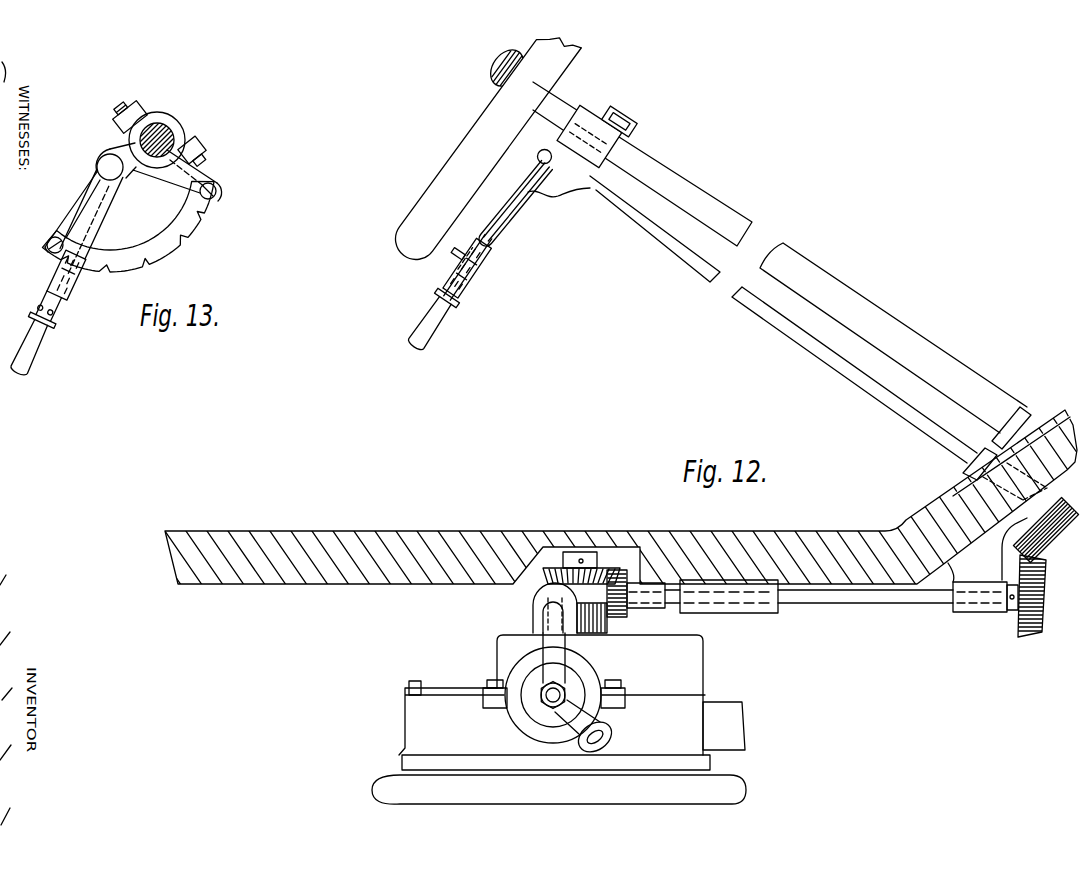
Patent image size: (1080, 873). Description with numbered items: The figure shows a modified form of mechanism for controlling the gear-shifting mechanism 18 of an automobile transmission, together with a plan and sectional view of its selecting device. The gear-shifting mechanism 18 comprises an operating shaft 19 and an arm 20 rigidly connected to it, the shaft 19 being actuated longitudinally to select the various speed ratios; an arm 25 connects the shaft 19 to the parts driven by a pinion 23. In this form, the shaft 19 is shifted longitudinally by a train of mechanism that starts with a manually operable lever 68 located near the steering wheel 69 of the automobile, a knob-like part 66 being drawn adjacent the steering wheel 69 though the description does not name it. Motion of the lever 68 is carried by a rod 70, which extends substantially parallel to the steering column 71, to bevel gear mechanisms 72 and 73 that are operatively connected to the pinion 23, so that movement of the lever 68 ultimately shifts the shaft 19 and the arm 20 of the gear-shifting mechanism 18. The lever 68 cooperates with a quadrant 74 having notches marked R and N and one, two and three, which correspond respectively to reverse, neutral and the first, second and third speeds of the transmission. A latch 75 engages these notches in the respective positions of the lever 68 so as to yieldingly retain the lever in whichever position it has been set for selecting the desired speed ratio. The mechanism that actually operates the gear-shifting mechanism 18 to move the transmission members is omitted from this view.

In FIG. 12, the gear-shifting mechanism 18 is at (508, 654).
In FIG. 12, the operating shaft 19 is at (560, 693).
In FIG. 12, the arm 20 is at (590, 718).
In FIG. 12, the pinion 23 is at (613, 628).
In FIG. 12, the arm 25 is at (550, 637).
In FIG. 12, the knob 66 is at (497, 64).
In FIG. 13, the manually operable lever 68 is at (61, 306).
In FIG. 12, the manually operable lever 68 is at (466, 277).
In FIG. 12, the steering wheel 69 is at (436, 181).
In FIG. 12, the rod 70 is at (843, 372).
In FIG. 12, the steering column 71 is at (912, 342).
In FIG. 12, the bevel gear mechanism 72 is at (1043, 562).
In FIG. 12, the bevel gear mechanism 73 is at (620, 578).
In FIG. 13, the quadrant 74 is at (200, 228).
In FIG. 13, the latch 75 is at (56, 277).